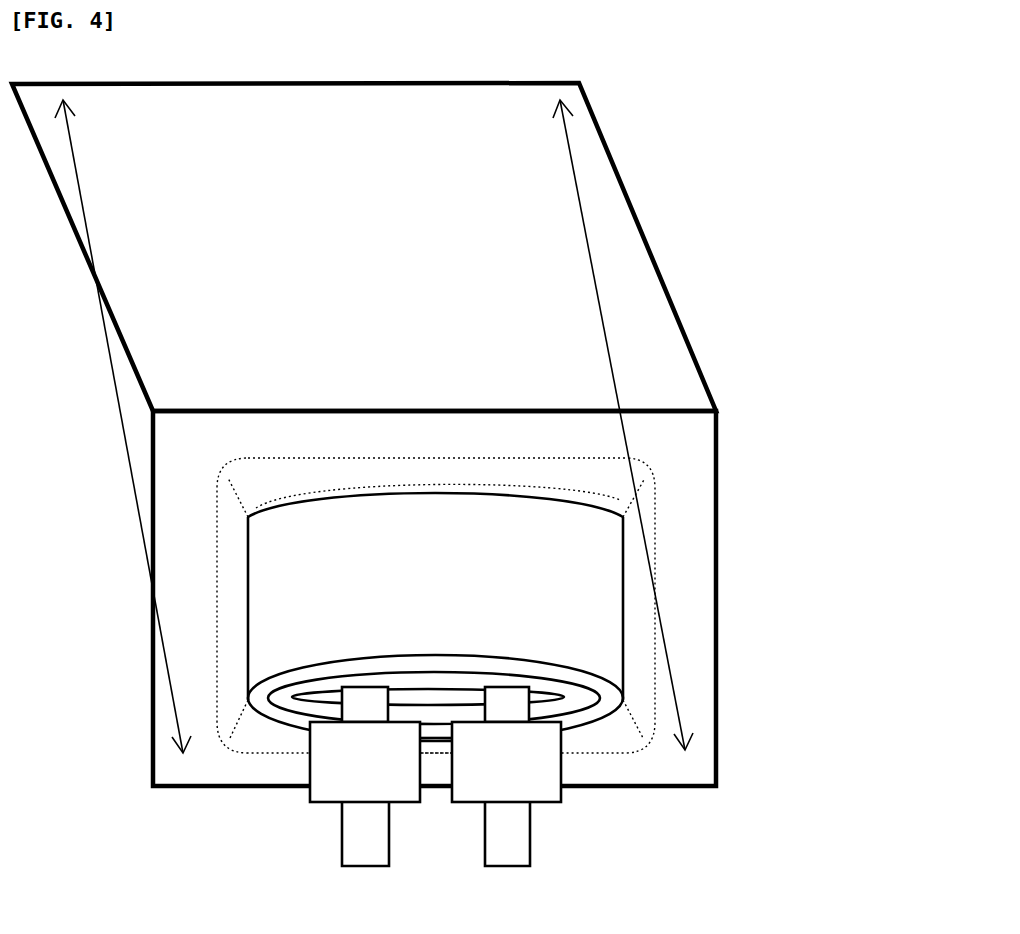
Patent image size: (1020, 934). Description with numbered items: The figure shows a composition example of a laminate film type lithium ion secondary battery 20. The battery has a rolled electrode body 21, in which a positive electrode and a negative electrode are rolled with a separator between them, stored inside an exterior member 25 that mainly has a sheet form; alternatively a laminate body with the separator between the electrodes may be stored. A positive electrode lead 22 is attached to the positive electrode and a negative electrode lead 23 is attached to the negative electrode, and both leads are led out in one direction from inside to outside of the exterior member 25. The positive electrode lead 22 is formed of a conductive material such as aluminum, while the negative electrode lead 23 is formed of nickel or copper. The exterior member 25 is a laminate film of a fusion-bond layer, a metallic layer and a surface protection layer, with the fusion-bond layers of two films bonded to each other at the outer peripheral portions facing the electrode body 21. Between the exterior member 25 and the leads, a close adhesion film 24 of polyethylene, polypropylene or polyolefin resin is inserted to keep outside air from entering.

The laminate film type lithium ion secondary battery 20 is at (453, 485).
The rolled electrode body 21 is at (562, 578).
The positive electrode lead 22 is at (358, 845).
The negative electrode lead 23 is at (505, 845).
The close adhesion film 24 is at (542, 769).
The exterior member 25 is at (460, 258).